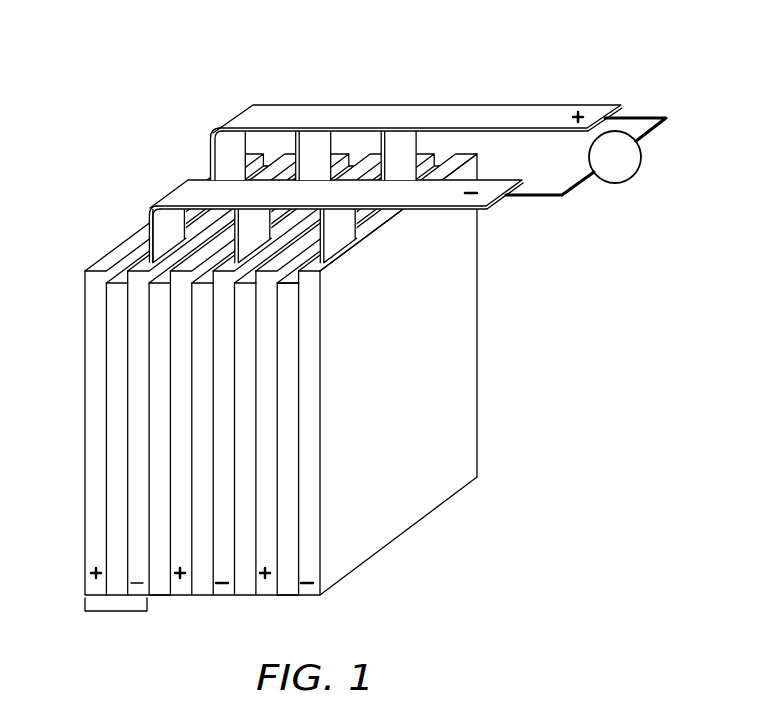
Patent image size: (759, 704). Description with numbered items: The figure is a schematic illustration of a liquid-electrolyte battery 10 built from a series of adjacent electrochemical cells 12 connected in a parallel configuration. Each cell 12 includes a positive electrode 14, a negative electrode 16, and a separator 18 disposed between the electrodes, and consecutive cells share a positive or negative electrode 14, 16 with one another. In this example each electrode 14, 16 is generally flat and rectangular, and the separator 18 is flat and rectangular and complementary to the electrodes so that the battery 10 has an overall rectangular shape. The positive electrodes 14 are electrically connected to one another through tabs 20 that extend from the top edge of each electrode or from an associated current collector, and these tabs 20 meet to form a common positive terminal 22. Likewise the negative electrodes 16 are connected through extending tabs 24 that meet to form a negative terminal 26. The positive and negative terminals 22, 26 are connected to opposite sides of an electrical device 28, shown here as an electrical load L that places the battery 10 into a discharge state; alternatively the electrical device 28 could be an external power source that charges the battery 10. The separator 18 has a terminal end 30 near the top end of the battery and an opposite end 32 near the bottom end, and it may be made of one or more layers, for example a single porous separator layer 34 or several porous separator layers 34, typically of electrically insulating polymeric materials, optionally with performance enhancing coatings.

The battery 10 is at (166, 85).
The electrochemical cell 12 is at (117, 612).
The positive electrode 14 is at (88, 548).
The negative electrode 16 is at (135, 508).
The separator 18 is at (158, 457).
The tab 20 is at (223, 156).
The positive terminal 22 is at (538, 118).
The tab 24 is at (165, 235).
The negative terminal 26 is at (428, 192).
The electrical device 28 is at (637, 163).
The terminal end 30 is at (287, 315).
The opposite end 32 is at (287, 547).
The porous separator layer 34 is at (287, 405).